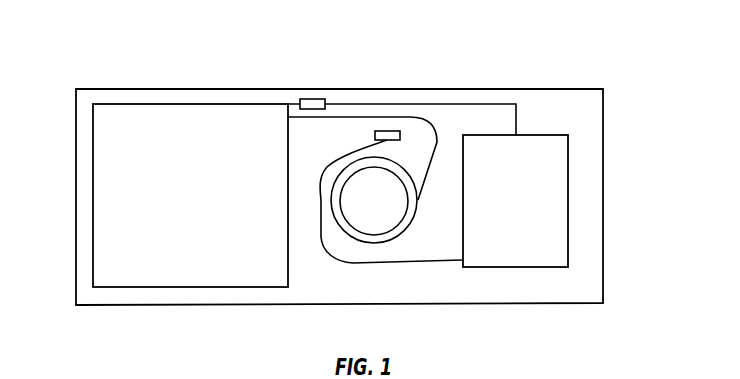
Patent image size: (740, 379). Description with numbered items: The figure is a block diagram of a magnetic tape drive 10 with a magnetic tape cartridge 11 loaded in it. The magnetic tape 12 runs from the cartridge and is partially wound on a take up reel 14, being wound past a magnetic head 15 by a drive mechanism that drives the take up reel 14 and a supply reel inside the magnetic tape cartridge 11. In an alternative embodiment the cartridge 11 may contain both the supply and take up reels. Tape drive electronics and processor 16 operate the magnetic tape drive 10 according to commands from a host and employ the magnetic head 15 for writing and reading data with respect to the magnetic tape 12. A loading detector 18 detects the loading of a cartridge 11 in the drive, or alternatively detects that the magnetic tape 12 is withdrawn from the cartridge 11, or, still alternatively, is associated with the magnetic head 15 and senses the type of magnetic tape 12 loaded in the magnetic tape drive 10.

The magnetic tape drive 10 is at (505, 39).
The magnetic tape cartridge 11 is at (93, 197).
The magnetic tape 12 is at (343, 117).
The take up reel 14 is at (392, 228).
The magnetic head 15 is at (398, 131).
The tape drive electronics and processor 16 is at (550, 135).
The loading detector 18 is at (305, 99).